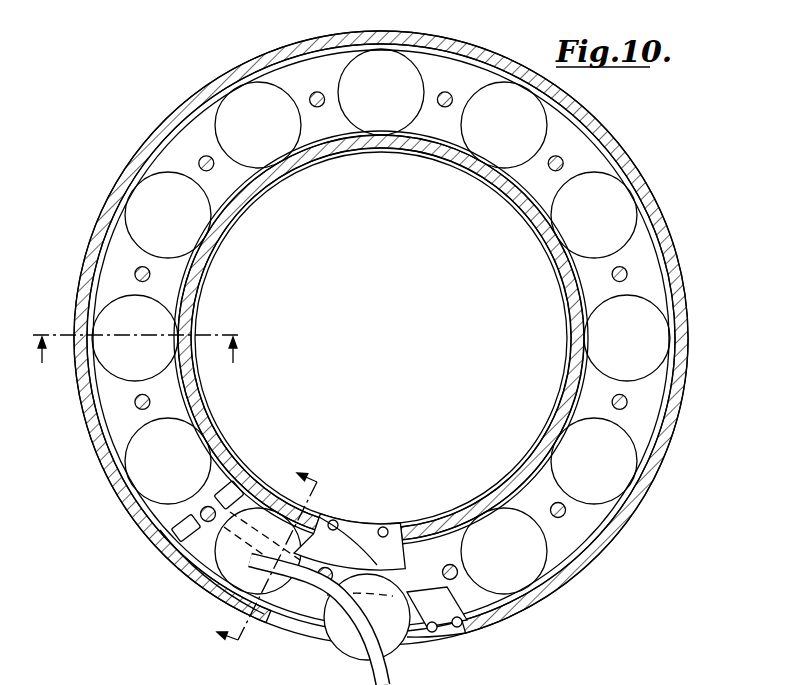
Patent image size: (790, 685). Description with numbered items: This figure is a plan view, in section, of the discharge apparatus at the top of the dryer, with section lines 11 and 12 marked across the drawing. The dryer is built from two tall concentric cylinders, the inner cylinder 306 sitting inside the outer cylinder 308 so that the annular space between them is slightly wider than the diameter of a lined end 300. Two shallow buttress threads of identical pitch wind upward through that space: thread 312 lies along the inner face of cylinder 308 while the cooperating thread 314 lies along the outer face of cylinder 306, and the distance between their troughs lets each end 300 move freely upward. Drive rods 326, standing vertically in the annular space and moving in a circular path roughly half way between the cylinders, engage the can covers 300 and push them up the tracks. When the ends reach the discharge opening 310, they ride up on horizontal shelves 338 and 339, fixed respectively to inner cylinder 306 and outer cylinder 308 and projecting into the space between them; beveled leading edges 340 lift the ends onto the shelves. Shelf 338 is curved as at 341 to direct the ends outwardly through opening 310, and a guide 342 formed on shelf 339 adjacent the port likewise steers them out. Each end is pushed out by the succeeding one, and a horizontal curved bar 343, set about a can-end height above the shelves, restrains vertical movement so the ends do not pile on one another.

The lined end 300 is at (497, 158).
The inner cylinder 306 is at (203, 408).
The outer cylinder 308 is at (125, 495).
The discharge opening 310 is at (413, 632).
The buttress thread 312 is at (80, 383).
The buttress thread 314 is at (185, 393).
The drive rod 326 is at (614, 267).
The horizontal shelf 338 is at (238, 495).
The horizontal shelf 339 is at (203, 547).
The beveled leading edge 340 is at (224, 485).
The curved portion of shelf 341 is at (352, 542).
The guide 342 is at (447, 628).
The horizontal curved bar 343 is at (312, 587).
The section line 11- 11 is at (141, 337).
The section line 12- 12 is at (270, 558).